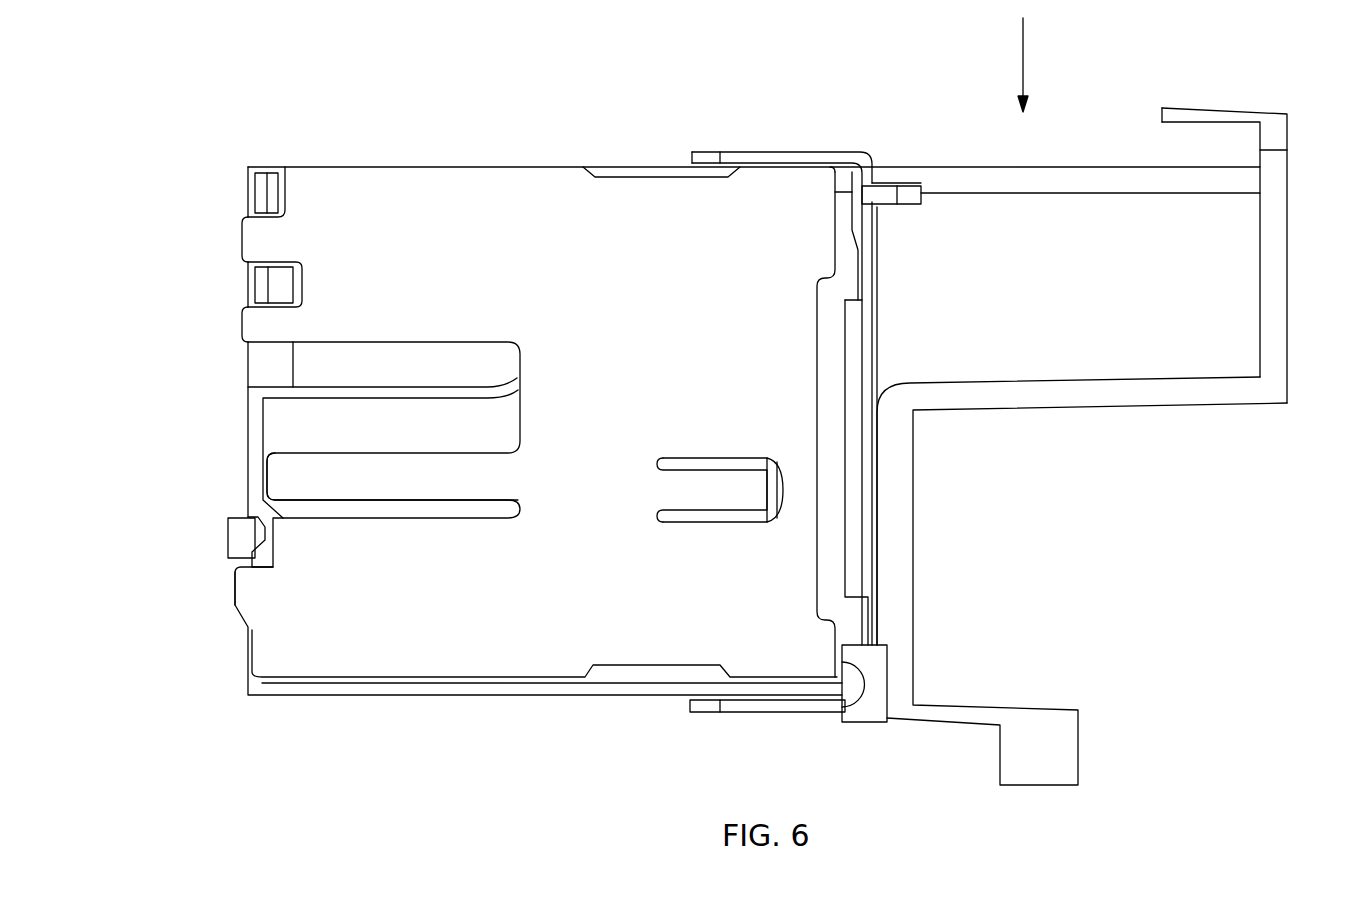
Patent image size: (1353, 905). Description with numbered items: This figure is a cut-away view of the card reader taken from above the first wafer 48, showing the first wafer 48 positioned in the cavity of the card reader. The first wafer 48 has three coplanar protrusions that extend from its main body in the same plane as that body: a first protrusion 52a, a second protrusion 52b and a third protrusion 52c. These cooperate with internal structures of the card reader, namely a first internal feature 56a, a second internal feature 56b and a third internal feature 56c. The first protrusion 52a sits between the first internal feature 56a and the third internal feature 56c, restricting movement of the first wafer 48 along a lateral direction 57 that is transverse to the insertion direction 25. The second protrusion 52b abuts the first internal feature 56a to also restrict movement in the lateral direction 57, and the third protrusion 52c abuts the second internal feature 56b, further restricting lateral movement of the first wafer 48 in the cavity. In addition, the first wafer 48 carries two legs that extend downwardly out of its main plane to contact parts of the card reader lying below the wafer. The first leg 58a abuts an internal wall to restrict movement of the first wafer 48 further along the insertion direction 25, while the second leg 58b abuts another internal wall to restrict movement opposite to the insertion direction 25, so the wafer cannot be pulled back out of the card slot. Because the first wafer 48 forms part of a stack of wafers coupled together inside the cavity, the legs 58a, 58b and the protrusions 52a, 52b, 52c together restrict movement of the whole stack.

The first wafer 48 is at (592, 235).
The first protrusion 52a is at (247, 238).
The second protrusion 52b is at (240, 323).
The third protrusion 52c is at (237, 592).
The first internal feature 56a is at (247, 282).
The second internal feature 56b is at (228, 537).
The third internal feature 56c is at (262, 197).
The first leg 58a is at (278, 480).
The second leg 58b is at (753, 492).
The lateral direction 57 is at (1044, 65).
The insertion direction 25 is at (1333, 551).